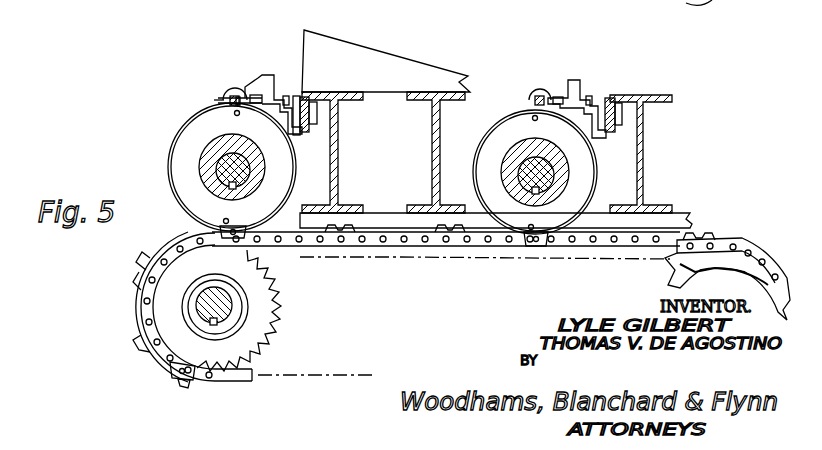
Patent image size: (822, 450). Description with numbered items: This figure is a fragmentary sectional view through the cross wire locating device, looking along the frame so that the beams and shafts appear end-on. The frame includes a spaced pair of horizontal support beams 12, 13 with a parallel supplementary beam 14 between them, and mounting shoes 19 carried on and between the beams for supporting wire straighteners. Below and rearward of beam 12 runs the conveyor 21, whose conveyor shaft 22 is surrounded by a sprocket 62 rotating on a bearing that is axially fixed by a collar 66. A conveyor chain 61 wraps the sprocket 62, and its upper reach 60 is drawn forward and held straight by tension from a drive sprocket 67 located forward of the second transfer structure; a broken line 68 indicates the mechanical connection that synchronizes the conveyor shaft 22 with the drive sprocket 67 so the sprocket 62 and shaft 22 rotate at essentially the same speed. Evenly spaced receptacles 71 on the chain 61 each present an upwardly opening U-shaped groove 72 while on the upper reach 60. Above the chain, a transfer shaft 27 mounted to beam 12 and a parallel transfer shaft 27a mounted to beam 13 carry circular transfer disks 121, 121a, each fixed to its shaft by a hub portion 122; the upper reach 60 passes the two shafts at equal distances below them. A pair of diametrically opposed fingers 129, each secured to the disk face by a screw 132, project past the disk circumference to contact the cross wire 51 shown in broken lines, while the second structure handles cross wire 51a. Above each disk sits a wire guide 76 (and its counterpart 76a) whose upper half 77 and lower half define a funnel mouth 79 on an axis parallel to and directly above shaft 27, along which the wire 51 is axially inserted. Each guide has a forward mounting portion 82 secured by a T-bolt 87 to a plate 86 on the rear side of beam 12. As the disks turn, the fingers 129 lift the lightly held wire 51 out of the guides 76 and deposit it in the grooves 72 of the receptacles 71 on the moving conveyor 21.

The support beam 12 is at (355, 97).
The support beam 13 is at (665, 102).
The supplementary beam 14 is at (420, 97).
The mounting shoe 19 is at (362, 60).
The conveyor 21 is at (372, 258).
The conveyor shaft 22 is at (230, 308).
The transfer shaft 27 is at (240, 172).
The transfer shaft 27a is at (548, 176).
The cross wire 51 is at (233, 95).
The cross wire 51a is at (538, 96).
The upper reach 60 is at (410, 248).
The conveyor chain 61 is at (152, 336).
The sprocket 62 is at (272, 332).
The collar 66 is at (220, 323).
The drive sprocket 67 is at (735, 262).
The broken line 68 is at (452, 262).
The receptacle 71 is at (232, 240).
The groove 72 is at (181, 383).
The wire guide 76 is at (268, 60).
The wire guide 76a is at (588, 76).
The upper half 77 is at (226, 93).
The funnel mouth 79 is at (222, 98).
The mounting portion 82 is at (290, 118).
The plate 86 is at (306, 96).
The T-bolt 87 is at (318, 112).
The transfer disk 121 is at (180, 180).
The transfer disk 121a is at (482, 152).
The hub portion 122 is at (200, 172).
The finger 129 is at (239, 96).
The screw 132 is at (239, 117).